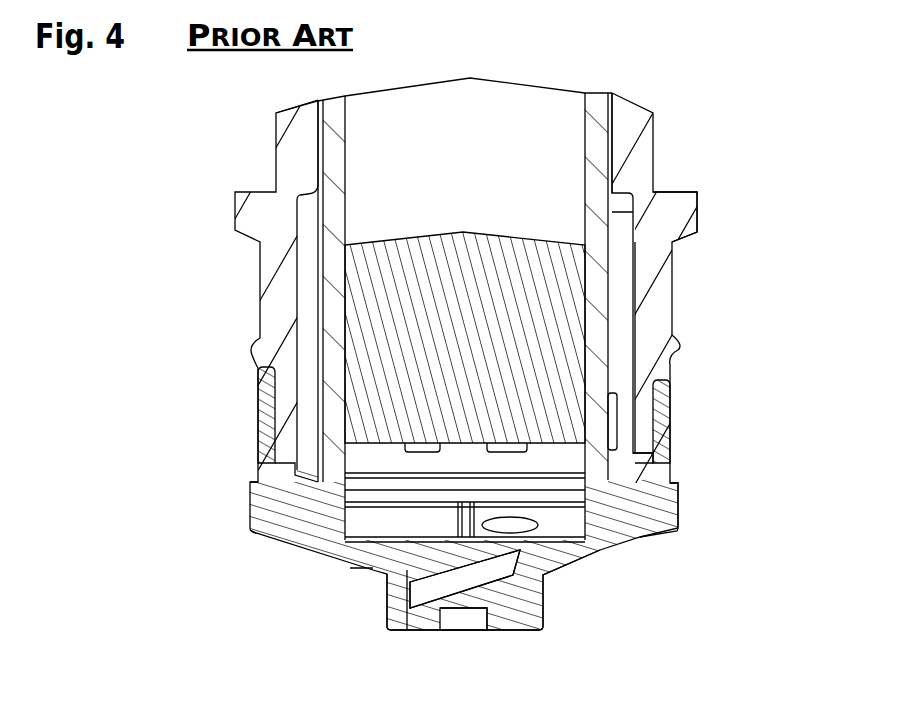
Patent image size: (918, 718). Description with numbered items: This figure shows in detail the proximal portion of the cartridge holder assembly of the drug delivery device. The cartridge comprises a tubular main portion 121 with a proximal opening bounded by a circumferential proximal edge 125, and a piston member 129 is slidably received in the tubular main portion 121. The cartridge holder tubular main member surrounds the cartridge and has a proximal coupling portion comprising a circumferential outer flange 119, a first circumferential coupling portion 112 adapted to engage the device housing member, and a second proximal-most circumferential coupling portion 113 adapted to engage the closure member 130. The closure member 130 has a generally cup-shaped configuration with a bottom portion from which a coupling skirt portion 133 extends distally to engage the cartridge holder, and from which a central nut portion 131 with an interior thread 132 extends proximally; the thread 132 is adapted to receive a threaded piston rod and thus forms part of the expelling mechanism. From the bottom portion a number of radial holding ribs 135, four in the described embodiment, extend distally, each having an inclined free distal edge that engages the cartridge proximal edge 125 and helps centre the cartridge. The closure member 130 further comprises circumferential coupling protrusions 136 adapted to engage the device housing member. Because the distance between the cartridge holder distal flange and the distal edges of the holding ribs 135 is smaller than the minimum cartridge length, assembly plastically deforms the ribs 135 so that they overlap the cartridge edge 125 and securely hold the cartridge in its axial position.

The first circumferential coupling portion 112 is at (660, 293).
The second proximal-most circumferential coupling portion 113 is at (645, 403).
The circumferential outer flange 119 is at (697, 215).
The tubular main portion 121 is at (598, 158).
The circumferential proximal edge 125 is at (338, 493).
The piston member 129 is at (378, 326).
The closure member 130 is at (638, 520).
The central nut portion 131 is at (543, 613).
The interior thread 132 is at (490, 590).
The coupling skirt portion 133 is at (667, 448).
The radial holding ribs 135 is at (318, 485).
The circumferential coupling protrusions 136 is at (667, 502).